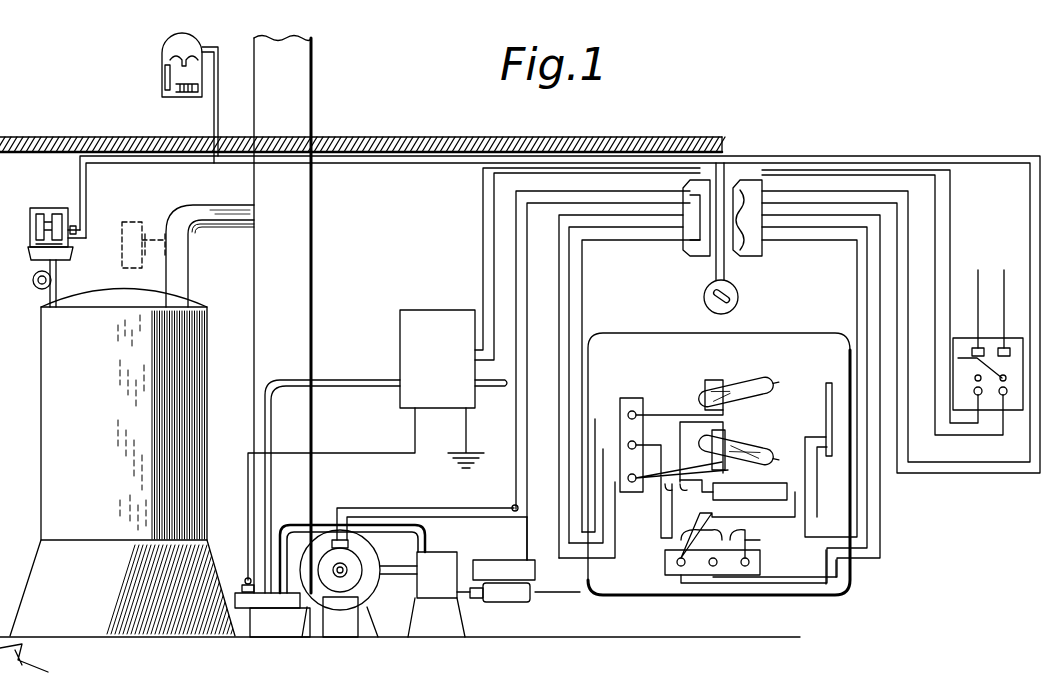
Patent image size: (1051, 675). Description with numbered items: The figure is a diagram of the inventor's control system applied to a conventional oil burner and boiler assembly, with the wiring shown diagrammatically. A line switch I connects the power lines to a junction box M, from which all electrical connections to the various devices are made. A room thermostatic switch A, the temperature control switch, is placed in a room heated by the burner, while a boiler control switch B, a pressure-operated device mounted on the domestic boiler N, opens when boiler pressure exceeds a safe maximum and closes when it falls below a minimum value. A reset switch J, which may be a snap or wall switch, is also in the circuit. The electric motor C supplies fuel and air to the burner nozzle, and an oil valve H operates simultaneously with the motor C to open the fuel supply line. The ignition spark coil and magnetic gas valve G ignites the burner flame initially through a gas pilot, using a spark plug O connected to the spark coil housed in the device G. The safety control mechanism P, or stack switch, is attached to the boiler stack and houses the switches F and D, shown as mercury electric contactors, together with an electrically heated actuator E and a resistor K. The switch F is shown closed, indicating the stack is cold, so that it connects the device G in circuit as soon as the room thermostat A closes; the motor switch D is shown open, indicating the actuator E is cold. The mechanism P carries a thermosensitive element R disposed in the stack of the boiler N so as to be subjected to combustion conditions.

The room thermostatic switch A is at (162, 66).
The boiler control switch B is at (30, 232).
The electric motor C is at (356, 566).
The motor switch D is at (760, 455).
The electrically heated actuator E is at (826, 403).
The switch F is at (741, 384).
The ignition spark coil and magnetic gas valve G is at (400, 390).
The oil valve H is at (512, 600).
The line switch I is at (1005, 405).
The reset switch J is at (740, 296).
The resistor K is at (778, 490).
The junction box M is at (683, 246).
The domestic boiler N is at (134, 463).
The spark plug O is at (246, 578).
The safety control mechanism P is at (852, 578).
The thermosensitive element R is at (176, 240).